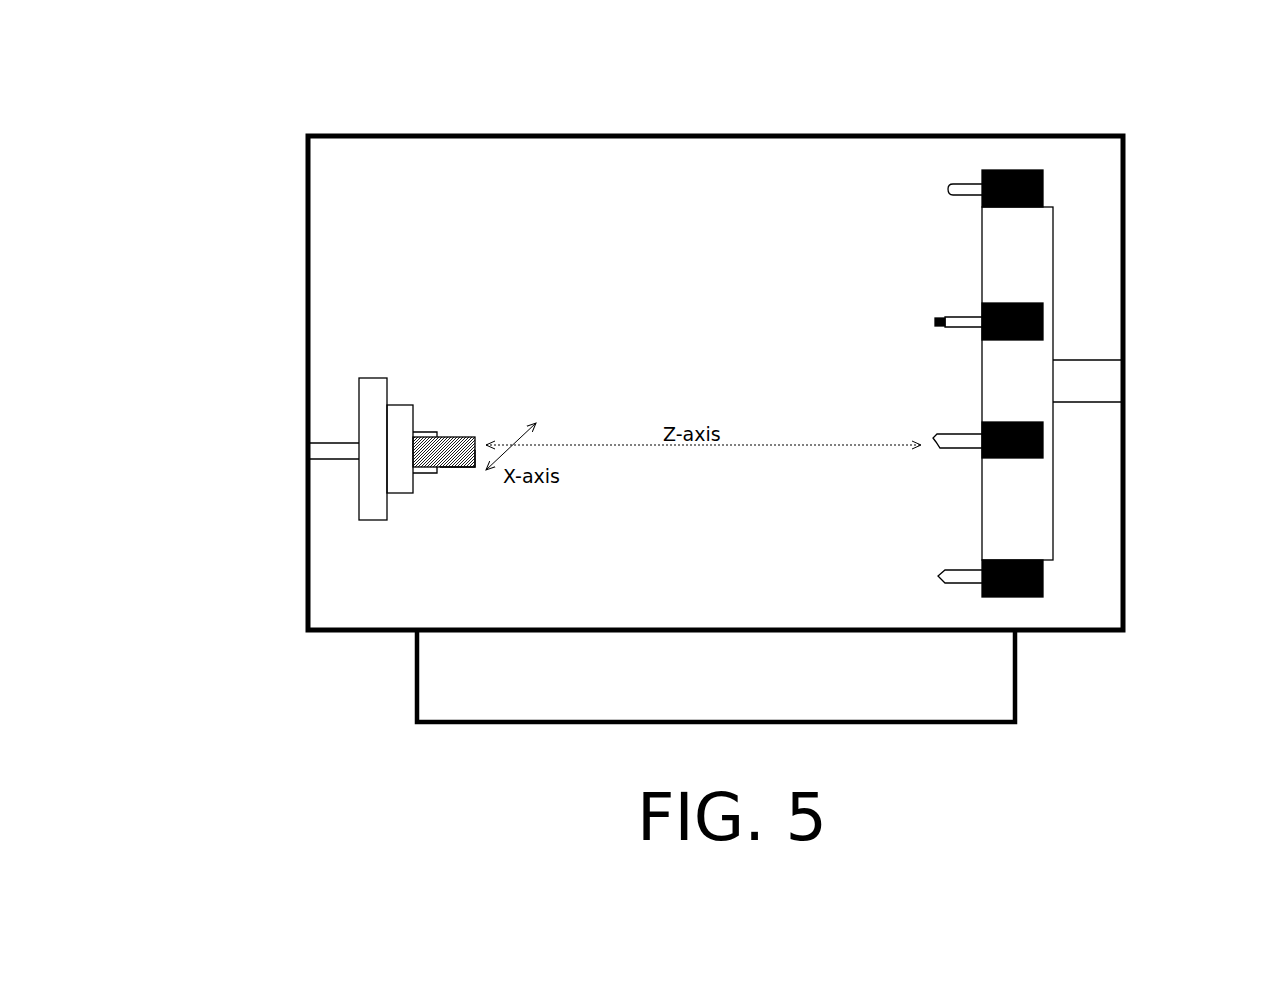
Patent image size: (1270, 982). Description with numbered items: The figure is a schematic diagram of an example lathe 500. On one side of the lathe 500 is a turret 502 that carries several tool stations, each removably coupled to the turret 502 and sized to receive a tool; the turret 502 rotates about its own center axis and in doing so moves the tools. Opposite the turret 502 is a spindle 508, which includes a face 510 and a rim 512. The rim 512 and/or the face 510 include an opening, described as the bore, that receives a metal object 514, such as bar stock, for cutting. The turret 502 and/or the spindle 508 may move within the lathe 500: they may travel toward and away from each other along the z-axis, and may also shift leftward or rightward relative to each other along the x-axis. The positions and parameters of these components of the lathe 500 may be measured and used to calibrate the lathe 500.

The lathe 500 is at (278, 86).
The turret 502 is at (1053, 263).
The spindle 508 is at (373, 378).
The face 510 is at (413, 405).
The rim 512 is at (437, 432).
The metal object 514 is at (458, 470).